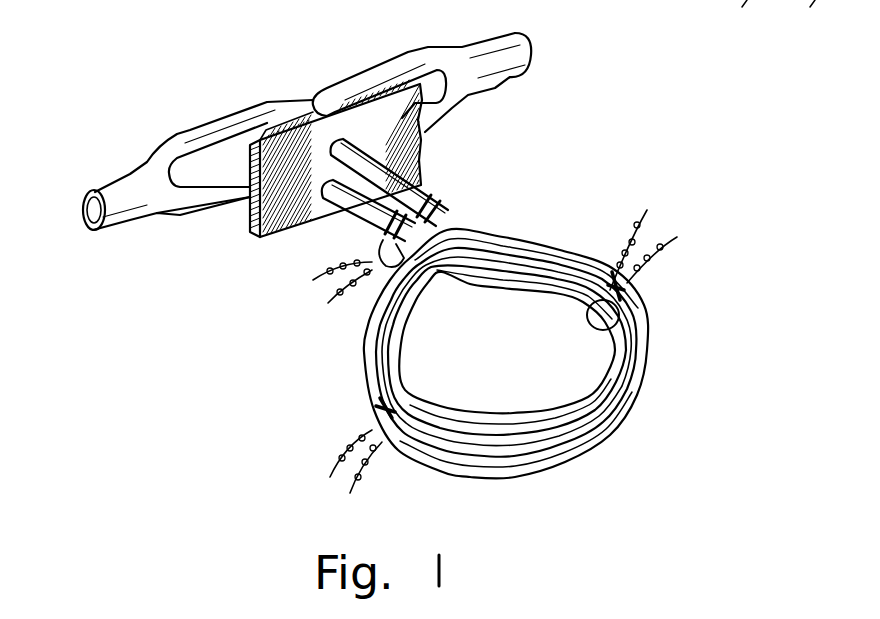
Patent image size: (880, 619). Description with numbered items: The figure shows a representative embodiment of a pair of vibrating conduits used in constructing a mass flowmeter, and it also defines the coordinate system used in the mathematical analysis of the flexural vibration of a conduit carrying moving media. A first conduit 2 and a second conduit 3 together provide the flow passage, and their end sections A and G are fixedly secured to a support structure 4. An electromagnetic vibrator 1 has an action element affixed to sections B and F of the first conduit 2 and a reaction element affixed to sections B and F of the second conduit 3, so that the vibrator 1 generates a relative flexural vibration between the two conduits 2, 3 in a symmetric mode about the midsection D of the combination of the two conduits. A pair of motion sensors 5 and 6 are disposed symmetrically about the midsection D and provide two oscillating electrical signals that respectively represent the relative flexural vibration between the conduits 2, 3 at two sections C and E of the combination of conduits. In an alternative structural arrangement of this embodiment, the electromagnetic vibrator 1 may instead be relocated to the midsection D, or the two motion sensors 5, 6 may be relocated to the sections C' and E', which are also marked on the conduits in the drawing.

The electromagnetic vibrator 1 is at (390, 275).
The first conduit 2 is at (537, 422).
The second conduit 3 is at (580, 440).
The support structure 4 is at (327, 133).
The motion sensor 5 is at (375, 412).
The motion sensor 6 is at (620, 333).
The end section A is at (417, 138).
The section B is at (435, 214).
The section C is at (315, 424).
The section C' is at (275, 238).
The midsection D is at (606, 407).
The section E is at (668, 255).
The section E' is at (443, 188).
The section F is at (440, 214).
The end section G is at (417, 138).